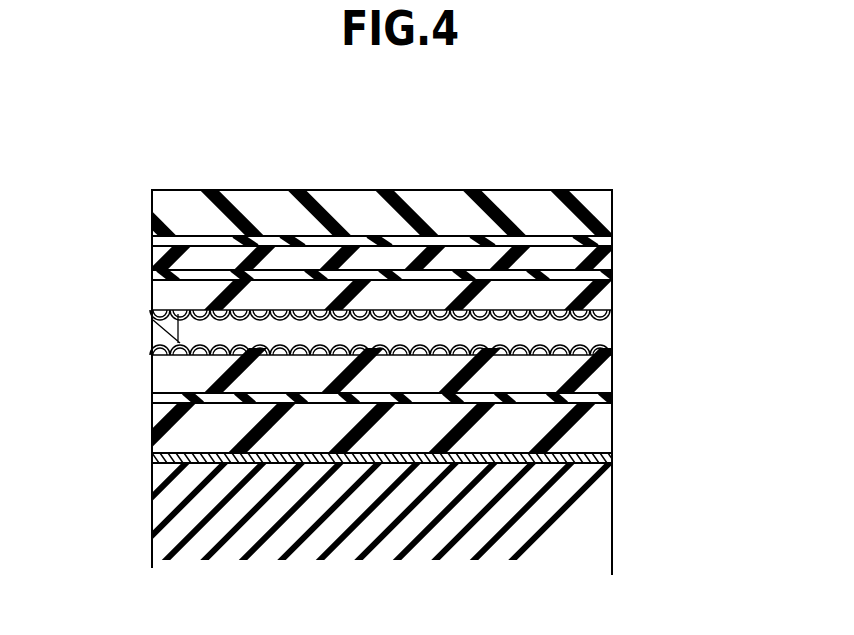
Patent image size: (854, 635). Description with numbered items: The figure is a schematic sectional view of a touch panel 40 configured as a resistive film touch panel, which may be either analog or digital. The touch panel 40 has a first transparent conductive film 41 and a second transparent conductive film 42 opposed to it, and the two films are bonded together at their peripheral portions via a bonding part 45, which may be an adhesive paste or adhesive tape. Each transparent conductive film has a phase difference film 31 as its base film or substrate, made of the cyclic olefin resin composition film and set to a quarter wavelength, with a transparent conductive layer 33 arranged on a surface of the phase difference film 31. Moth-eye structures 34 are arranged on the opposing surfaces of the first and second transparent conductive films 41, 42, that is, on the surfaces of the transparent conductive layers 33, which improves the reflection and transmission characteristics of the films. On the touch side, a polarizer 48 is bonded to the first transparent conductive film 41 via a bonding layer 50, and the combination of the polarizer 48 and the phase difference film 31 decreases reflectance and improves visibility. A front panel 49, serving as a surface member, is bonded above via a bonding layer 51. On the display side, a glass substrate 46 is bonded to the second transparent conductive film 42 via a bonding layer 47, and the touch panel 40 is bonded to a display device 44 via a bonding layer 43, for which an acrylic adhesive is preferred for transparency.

The touch panel 40 is at (203, 157).
The front panel 49 is at (613, 213).
The bonding layer 51 is at (613, 243).
The polarizer 48 is at (613, 259).
The bonding layer 50 is at (613, 276).
The first transparent conductive film 41 is at (693, 233).
The phase difference film 31 is at (613, 297).
The transparent conductive layer 33 is at (613, 316).
The moth-eye structure 34 is at (200, 313).
The bonding part 45 is at (613, 328).
The second transparent conductive film 42 is at (695, 352).
The bonding layer 47 is at (613, 414).
The glass substrate 46 is at (613, 430).
The bonding layer 43 is at (613, 458).
The display device 44 is at (613, 545).